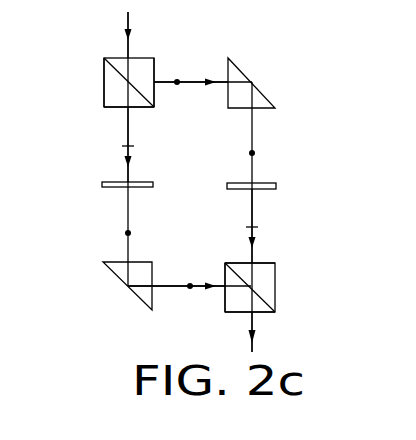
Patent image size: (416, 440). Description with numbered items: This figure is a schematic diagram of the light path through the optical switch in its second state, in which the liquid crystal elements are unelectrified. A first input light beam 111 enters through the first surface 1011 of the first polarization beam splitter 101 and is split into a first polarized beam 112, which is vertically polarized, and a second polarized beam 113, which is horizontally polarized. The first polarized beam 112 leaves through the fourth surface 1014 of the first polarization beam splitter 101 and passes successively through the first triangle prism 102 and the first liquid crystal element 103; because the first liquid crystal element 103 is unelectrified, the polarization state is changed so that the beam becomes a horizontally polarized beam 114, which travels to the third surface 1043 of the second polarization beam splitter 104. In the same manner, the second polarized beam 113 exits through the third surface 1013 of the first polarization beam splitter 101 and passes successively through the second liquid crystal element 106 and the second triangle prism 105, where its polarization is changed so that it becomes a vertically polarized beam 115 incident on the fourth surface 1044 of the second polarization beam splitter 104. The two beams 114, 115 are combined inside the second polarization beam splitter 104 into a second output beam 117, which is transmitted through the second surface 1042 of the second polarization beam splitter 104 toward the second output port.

The first polarization beam splitter 101 is at (140, 62).
The first surface 1011 is at (108, 58).
The third surface 1013 is at (143, 107).
The fourth surface 1014 is at (152, 88).
The first triangle prism 102 is at (265, 100).
The first liquid crystal element 103 is at (265, 183).
The second polarization beam splitter 104 is at (263, 270).
The second surface 1042 is at (253, 313).
The third surface 1043 is at (240, 262).
The fourth surface 1044 is at (225, 303).
The second triangle prism 105 is at (145, 293).
The second liquid crystal element 106 is at (118, 187).
The first input light beam 111 is at (128, 40).
The first polarized beam 112 is at (200, 80).
The second polarized beam 113 is at (128, 123).
The horizontally polarized beam 114 is at (253, 202).
The vertically polarized beam 115 is at (162, 285).
The second output beam 117 is at (253, 317).